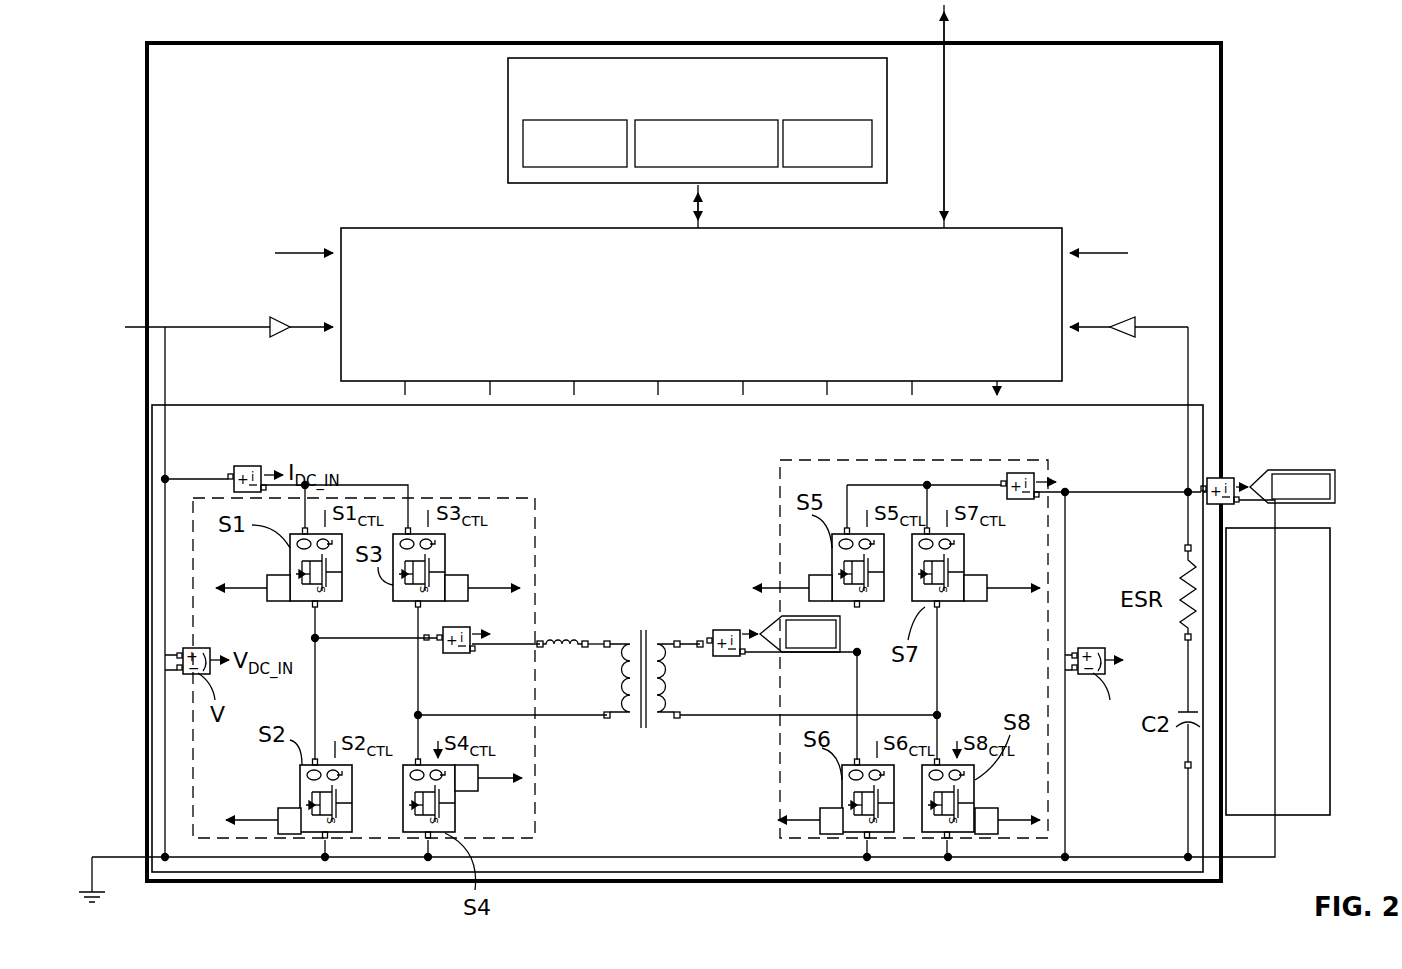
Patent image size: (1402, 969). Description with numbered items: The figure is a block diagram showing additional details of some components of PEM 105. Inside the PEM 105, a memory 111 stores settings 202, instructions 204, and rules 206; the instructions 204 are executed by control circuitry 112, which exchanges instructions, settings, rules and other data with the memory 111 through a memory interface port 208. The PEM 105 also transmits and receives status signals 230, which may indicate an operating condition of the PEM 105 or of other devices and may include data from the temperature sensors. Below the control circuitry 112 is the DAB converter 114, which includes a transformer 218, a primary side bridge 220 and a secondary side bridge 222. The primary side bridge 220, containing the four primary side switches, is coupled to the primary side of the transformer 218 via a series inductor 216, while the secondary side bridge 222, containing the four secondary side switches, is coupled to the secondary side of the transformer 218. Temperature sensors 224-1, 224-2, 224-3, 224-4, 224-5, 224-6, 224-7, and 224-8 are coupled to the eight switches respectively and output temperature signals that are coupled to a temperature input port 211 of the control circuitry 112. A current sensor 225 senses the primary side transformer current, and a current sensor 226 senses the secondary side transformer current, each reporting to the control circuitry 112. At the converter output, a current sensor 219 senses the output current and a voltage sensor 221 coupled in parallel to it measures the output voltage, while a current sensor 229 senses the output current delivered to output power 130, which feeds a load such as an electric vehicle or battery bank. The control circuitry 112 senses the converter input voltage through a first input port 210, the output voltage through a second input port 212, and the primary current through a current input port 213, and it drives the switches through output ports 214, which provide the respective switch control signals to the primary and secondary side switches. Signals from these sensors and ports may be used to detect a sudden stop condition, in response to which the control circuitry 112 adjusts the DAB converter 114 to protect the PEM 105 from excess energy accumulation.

The PEM 105 is at (212, 42).
The memory 111 is at (508, 119).
The control circuitry 112 is at (410, 228).
The DAB converter 114 is at (272, 405).
The output power 130 is at (1305, 815).
The settings 202 is at (587, 120).
The instructions 204 is at (748, 167).
The rules 206 is at (803, 120).
The memory interface port 208 is at (690, 210).
The first input port 210 is at (458, 330).
The temperature input port 211 is at (487, 258).
The second input port 212 is at (920, 310).
The current input port 213 is at (1030, 258).
The output ports 214 is at (576, 337).
The series inductor 216 is at (565, 638).
The transformer 218 is at (644, 628).
The current sensor 219 is at (1022, 473).
The primary side bridge 220 is at (476, 498).
The voltage sensor 221 is at (1085, 645).
The secondary side bridge 222 is at (845, 460).
The temperature sensor 224-1 is at (267, 600).
The temperature sensor 224-2 is at (278, 825).
The temperature sensor 224-3 is at (460, 603).
The temperature sensor 224-4 is at (503, 807).
The temperature sensor 224-5 is at (809, 590).
The temperature sensor 224-6 is at (817, 825).
The temperature sensor 224-7 is at (972, 602).
The temperature sensor 224-8 is at (982, 835).
The current sensor 225 is at (478, 690).
The current sensor 226 is at (742, 696).
The current sensor 229 is at (1223, 478).
The status signals 230 is at (1028, 170).